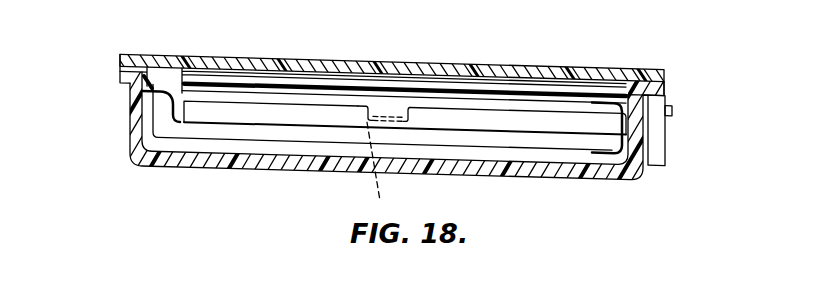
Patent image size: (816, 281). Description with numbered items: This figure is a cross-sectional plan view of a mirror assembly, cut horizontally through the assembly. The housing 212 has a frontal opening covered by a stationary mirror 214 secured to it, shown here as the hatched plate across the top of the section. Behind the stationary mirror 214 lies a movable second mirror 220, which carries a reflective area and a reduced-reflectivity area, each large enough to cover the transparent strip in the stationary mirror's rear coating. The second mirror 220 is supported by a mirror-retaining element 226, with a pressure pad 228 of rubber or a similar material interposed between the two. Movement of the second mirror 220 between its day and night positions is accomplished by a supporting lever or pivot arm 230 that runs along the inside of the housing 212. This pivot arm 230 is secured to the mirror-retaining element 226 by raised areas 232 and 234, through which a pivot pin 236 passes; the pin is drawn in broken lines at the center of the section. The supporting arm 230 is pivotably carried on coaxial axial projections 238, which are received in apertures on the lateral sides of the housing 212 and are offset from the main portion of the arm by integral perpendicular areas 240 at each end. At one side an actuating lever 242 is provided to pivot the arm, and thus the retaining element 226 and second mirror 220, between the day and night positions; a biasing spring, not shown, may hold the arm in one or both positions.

The housing 212 is at (561, 174).
The stationary mirror 214 is at (390, 67).
The movable second mirror 220 is at (312, 71).
The mirror-retaining element 226 is at (490, 103).
The pressure pad 228 is at (218, 89).
The supporting lever or pivot arm 230 is at (212, 141).
The raised area 232 is at (396, 118).
The raised area 234 is at (360, 108).
The pivot pin 236 is at (388, 165).
The axial projections 238 is at (138, 95).
The integral perpendicular areas 240 is at (172, 122).
The actuating lever 242 is at (665, 136).